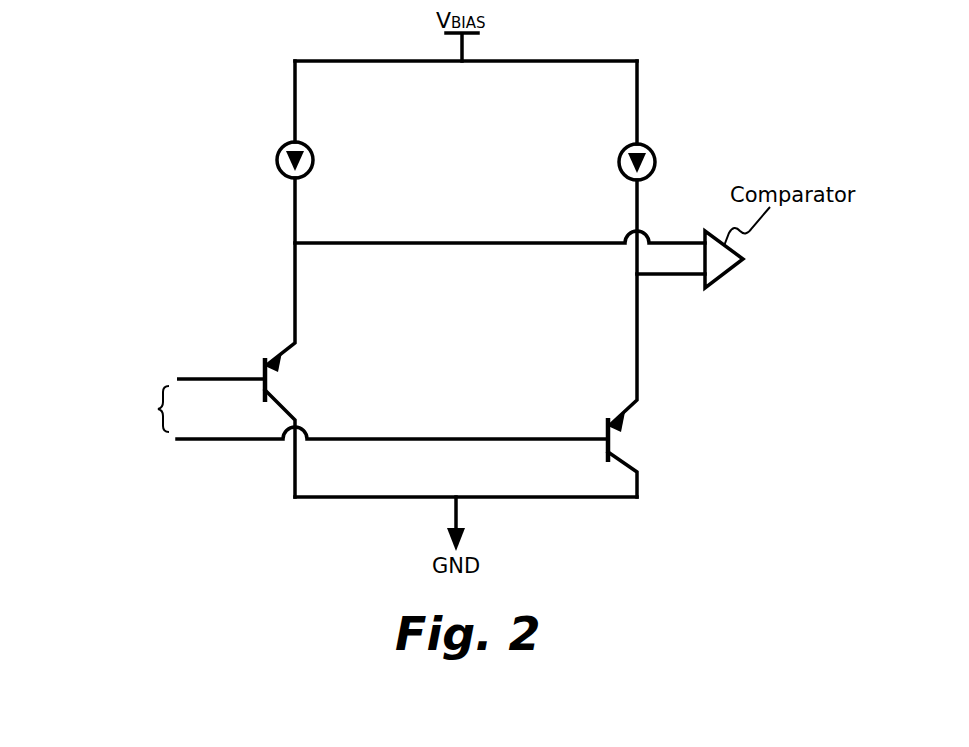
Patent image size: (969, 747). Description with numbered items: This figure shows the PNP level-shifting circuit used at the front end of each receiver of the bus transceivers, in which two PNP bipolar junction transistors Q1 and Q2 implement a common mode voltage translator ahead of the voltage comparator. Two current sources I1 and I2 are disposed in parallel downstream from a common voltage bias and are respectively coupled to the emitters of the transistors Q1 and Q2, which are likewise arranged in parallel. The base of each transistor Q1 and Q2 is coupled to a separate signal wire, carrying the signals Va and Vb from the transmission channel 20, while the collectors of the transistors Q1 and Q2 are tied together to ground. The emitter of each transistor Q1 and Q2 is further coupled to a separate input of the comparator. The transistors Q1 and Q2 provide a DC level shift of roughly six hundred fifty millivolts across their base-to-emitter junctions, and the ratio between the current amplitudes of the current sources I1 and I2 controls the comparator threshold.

The transmission channel 20 is at (314, 408).
The PNP bipolar junction transistor Q1 is at (248, 377).
The PNP bipolar junction transistor Q2 is at (635, 440).
The current source I1 is at (280, 160).
The current source I2 is at (649, 162).